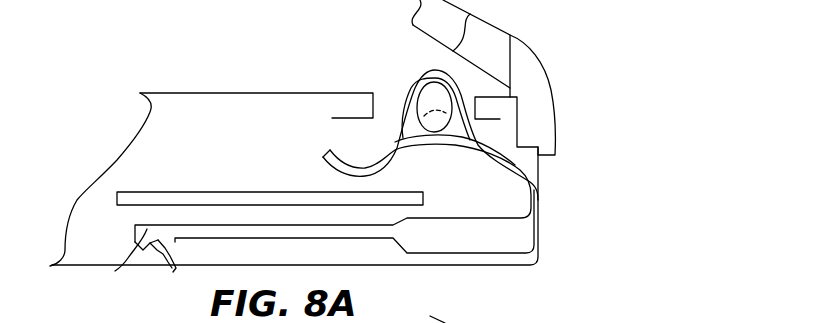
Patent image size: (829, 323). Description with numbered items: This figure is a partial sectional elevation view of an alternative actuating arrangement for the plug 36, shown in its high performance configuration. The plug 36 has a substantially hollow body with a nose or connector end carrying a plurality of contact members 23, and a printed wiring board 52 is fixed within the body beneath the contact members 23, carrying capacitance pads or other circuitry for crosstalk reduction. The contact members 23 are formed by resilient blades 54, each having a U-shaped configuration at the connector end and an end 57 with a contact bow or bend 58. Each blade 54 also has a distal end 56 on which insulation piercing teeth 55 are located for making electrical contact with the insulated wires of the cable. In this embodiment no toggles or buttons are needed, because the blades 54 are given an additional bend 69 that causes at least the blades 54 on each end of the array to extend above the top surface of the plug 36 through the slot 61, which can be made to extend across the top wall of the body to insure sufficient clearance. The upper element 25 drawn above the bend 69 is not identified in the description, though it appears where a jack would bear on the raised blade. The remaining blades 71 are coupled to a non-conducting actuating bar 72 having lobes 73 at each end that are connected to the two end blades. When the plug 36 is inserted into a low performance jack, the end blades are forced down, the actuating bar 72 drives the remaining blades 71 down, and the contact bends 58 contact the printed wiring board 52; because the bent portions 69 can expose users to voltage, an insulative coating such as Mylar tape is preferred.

The contact members 23 is at (538, 236).
The cover member 25 is at (511, 36).
The plug 36 is at (228, 93).
The printed wiring board 52 is at (217, 190).
The blades 54 is at (491, 241).
The insulation piercing teeth 55 is at (165, 269).
The distal end 56 is at (131, 264).
The end 57 is at (333, 162).
The contact bend 58 is at (368, 164).
The slot 61 is at (382, 96).
The additional bend 69 is at (432, 71).
The remaining blades 71 is at (428, 142).
The non-conducting actuating bar 72 is at (432, 123).
The lobes 73 is at (435, 95).